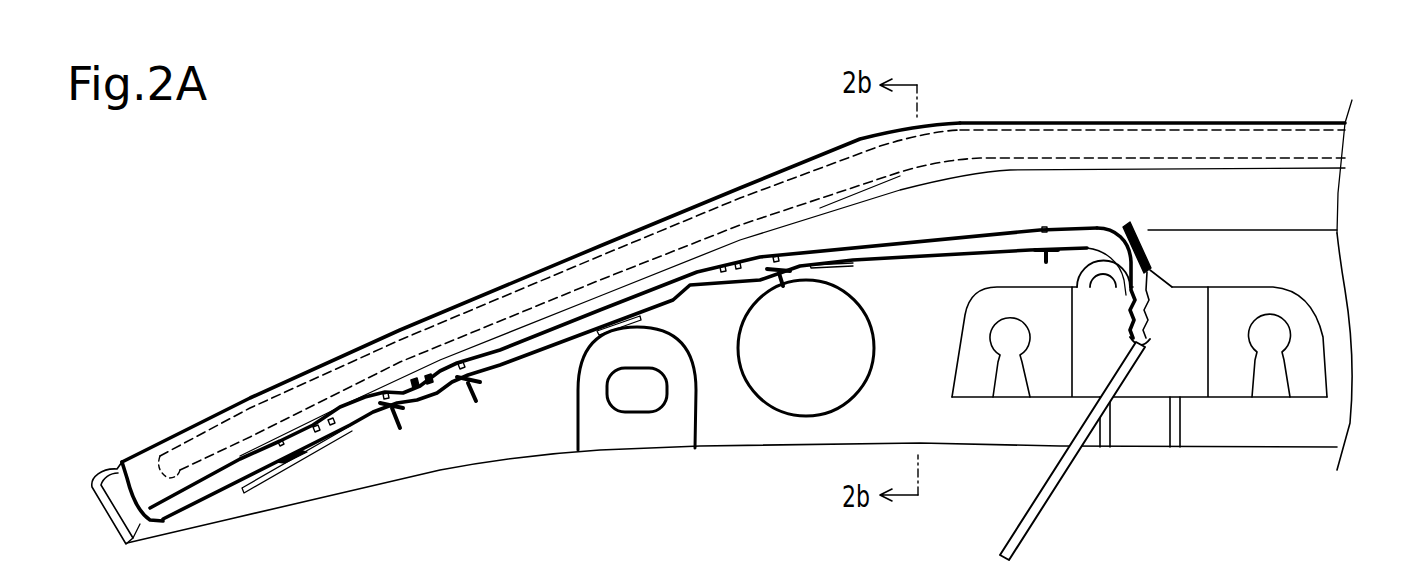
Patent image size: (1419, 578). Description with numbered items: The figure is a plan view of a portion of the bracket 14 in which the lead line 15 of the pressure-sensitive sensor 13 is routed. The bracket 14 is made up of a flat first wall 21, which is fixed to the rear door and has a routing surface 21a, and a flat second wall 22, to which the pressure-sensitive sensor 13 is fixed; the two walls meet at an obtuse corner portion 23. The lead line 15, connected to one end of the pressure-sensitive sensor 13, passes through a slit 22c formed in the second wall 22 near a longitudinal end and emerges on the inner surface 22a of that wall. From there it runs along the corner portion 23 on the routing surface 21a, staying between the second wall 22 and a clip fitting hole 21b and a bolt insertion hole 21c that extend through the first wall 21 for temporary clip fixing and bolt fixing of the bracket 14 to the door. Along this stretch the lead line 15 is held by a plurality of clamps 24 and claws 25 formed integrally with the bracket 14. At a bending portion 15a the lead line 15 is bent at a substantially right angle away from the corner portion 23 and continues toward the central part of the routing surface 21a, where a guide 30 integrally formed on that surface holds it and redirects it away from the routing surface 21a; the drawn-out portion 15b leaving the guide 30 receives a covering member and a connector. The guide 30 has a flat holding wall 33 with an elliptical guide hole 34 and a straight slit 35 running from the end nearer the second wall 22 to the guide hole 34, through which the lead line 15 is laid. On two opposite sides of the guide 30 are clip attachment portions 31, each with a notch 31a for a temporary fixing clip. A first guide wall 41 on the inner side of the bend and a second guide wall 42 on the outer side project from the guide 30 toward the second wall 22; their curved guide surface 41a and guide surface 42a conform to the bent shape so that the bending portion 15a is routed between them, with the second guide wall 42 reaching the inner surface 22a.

The pressure-sensitive sensor 13 is at (680, 215).
The bracket 14 is at (1213, 122).
The lead line 15 is at (520, 353).
The bending portion 15a is at (1123, 230).
The drawn-out portion 15b is at (1040, 528).
The first wall 21 is at (997, 447).
The routing surface 21a is at (717, 367).
The clip fitting hole 21b is at (633, 403).
The bolt insertion hole 21c is at (805, 405).
The second wall 22 is at (988, 122).
The inner surface 22a is at (862, 215).
The slit 22c is at (117, 470).
The corner portion 23 is at (1307, 232).
The clamps 24 is at (392, 415).
The claws 25 is at (428, 372).
The guide 30 is at (1137, 400).
The clip attachment portion 31 is at (978, 313).
The notch 31a is at (998, 340).
The holding wall 33 is at (1087, 313).
The guide hole 34 is at (1148, 355).
The slit 35 is at (1152, 310).
The first guide wall 41 is at (1080, 272).
The curved guide surface 41a is at (1080, 233).
The second guide wall 42 is at (1147, 248).
The guide surface 42a is at (1147, 233).